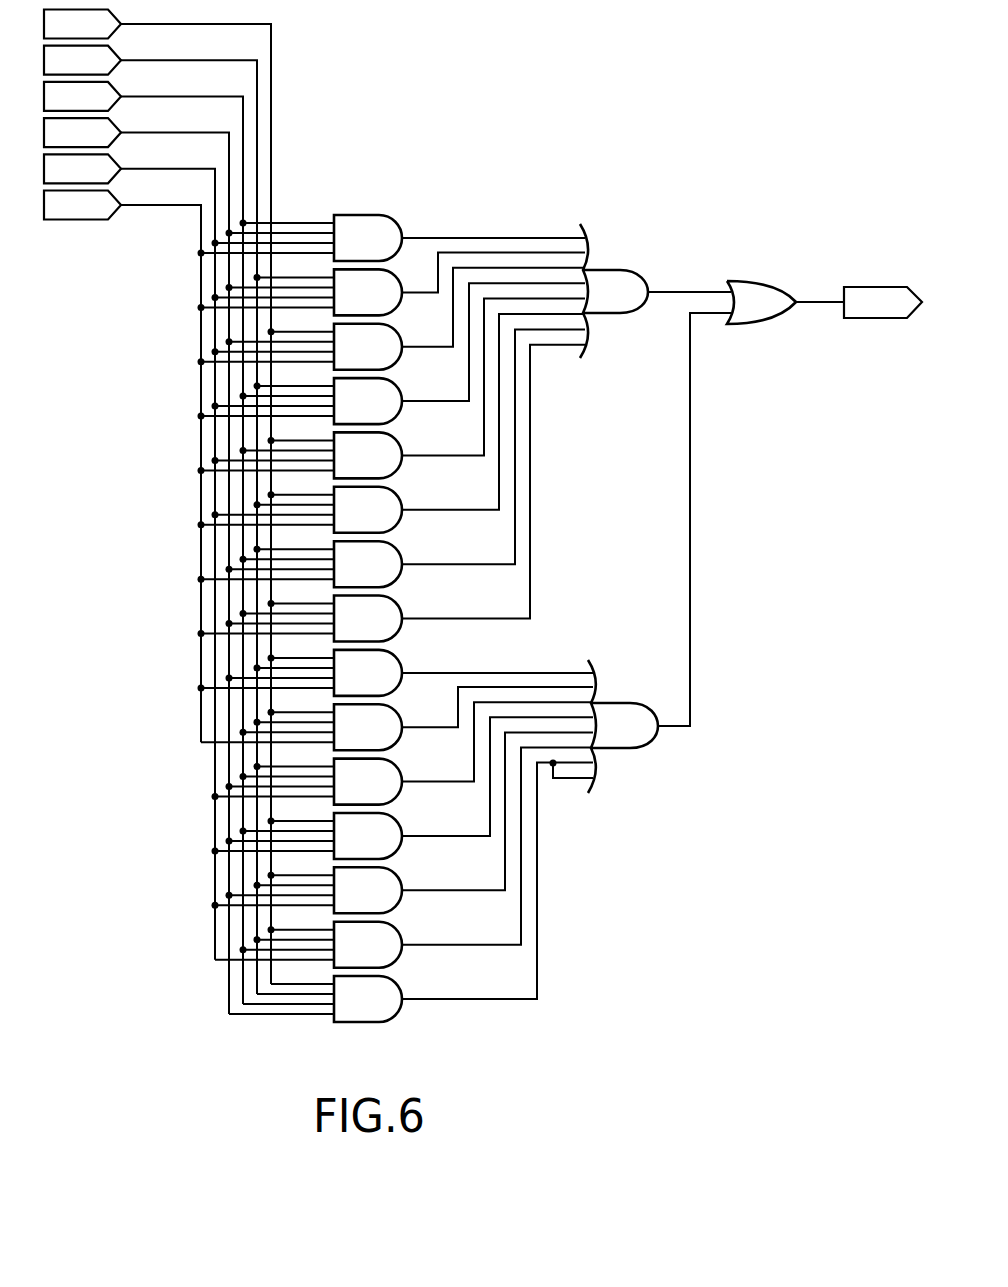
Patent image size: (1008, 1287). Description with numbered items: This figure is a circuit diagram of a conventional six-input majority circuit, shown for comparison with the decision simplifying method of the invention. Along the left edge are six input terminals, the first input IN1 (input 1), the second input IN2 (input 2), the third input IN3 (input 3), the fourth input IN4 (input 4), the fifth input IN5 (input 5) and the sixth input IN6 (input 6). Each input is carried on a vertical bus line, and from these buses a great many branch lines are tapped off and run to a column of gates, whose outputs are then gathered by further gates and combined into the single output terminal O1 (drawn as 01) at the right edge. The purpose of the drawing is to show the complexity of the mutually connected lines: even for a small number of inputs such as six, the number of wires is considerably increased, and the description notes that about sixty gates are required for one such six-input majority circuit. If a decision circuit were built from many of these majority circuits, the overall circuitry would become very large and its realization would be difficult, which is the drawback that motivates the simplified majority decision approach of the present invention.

The first input signal IN1 is at (157, 497).
The first input signal IN1 1 is at (157, 497).
The second input signal IN2 is at (150, 520).
The second input signal IN2 2 is at (150, 520).
The third input signal IN3 is at (143, 543).
The third input signal IN3 3 is at (143, 543).
The fourth input signal IN4 is at (136, 566).
The fourth input signal IN4 4 is at (136, 566).
The fifth input signal IN5 is at (129, 556).
The fifth input signal IN5 5 is at (129, 556).
The sixth input signal IN6 is at (122, 467).
The sixth input signal IN6 6 is at (122, 467).
The output signal 01 is at (859, 302).
The output signal O1 is at (859, 302).